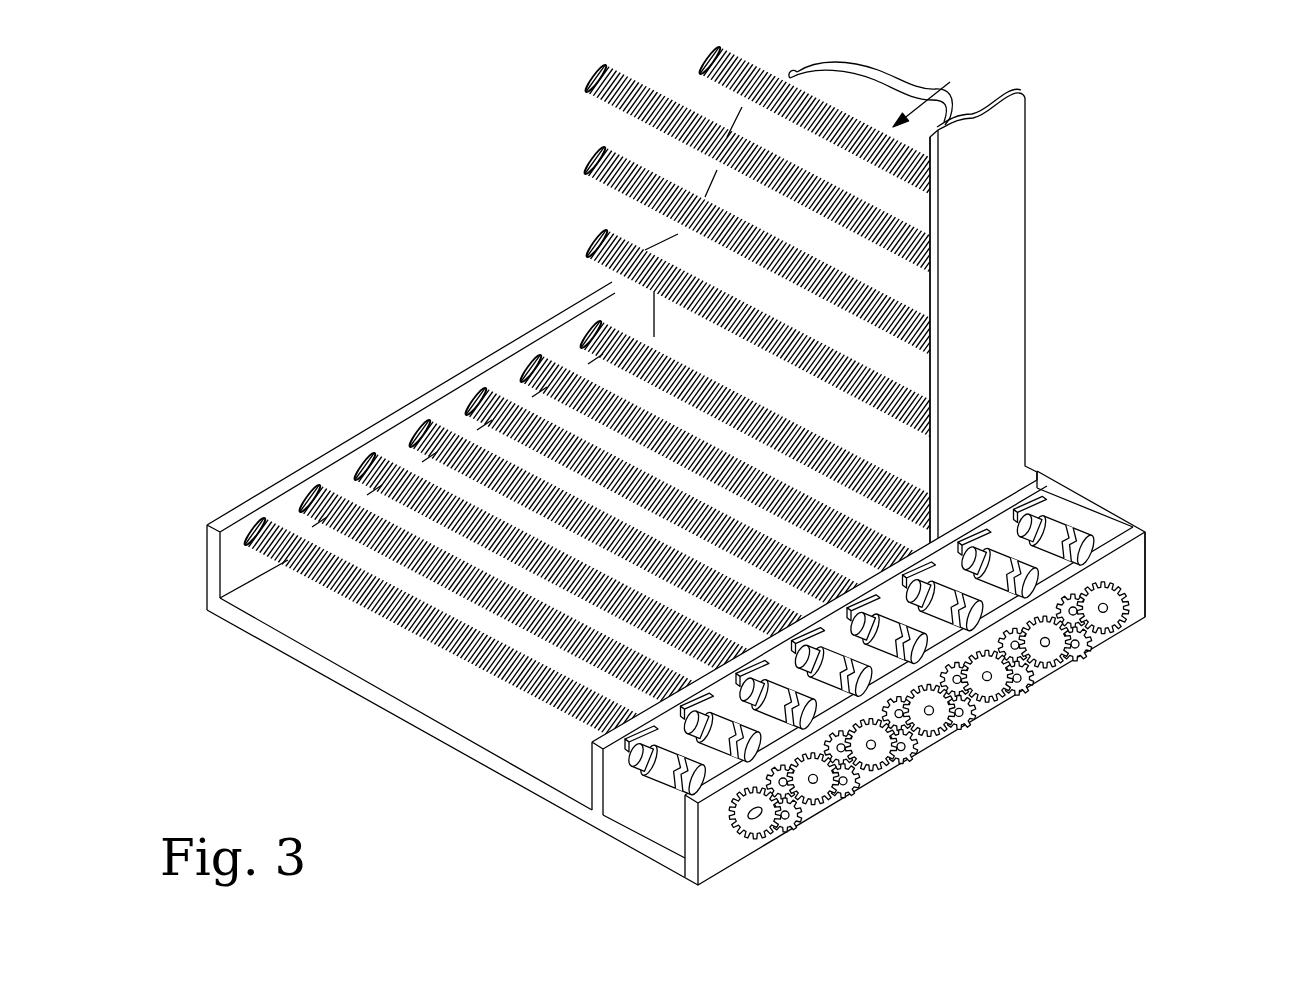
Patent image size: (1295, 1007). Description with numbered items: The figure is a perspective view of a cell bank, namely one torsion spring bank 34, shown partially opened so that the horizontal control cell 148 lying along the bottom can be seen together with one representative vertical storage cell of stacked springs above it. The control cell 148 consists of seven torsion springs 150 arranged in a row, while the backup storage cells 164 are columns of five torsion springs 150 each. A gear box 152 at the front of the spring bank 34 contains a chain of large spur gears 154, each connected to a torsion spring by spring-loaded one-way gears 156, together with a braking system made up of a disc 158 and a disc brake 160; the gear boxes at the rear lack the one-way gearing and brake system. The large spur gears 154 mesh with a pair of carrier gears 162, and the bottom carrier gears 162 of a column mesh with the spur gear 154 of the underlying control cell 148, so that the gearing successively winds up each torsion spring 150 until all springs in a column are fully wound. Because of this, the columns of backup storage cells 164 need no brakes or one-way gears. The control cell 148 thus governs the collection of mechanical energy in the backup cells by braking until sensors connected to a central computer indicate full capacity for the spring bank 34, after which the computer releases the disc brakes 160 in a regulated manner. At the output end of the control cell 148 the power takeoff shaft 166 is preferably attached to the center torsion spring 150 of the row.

The torsion spring bank 34 is at (1064, 266).
The horizontal control cell 148 is at (1142, 436).
The torsion springs 150 is at (584, 165).
The gear box 152 is at (1147, 572).
The large spur gears 154 is at (1097, 618).
The spring-loaded one-way gears 156 is at (652, 768).
The disc 158 is at (580, 802).
The disc brake 160 is at (585, 768).
The carrier gears 162 is at (762, 832).
The backup storage cells 164 is at (938, 78).
The power takeoff shaft 166 is at (1008, 690).